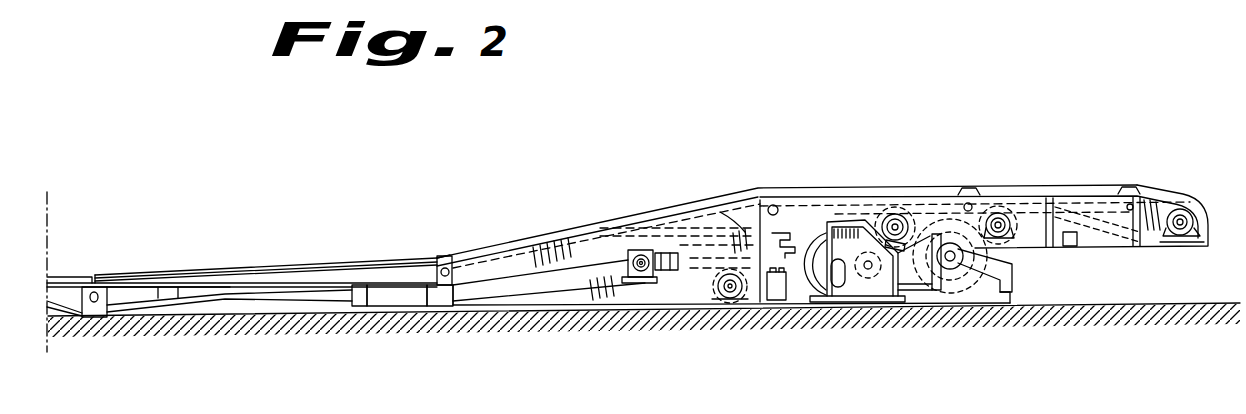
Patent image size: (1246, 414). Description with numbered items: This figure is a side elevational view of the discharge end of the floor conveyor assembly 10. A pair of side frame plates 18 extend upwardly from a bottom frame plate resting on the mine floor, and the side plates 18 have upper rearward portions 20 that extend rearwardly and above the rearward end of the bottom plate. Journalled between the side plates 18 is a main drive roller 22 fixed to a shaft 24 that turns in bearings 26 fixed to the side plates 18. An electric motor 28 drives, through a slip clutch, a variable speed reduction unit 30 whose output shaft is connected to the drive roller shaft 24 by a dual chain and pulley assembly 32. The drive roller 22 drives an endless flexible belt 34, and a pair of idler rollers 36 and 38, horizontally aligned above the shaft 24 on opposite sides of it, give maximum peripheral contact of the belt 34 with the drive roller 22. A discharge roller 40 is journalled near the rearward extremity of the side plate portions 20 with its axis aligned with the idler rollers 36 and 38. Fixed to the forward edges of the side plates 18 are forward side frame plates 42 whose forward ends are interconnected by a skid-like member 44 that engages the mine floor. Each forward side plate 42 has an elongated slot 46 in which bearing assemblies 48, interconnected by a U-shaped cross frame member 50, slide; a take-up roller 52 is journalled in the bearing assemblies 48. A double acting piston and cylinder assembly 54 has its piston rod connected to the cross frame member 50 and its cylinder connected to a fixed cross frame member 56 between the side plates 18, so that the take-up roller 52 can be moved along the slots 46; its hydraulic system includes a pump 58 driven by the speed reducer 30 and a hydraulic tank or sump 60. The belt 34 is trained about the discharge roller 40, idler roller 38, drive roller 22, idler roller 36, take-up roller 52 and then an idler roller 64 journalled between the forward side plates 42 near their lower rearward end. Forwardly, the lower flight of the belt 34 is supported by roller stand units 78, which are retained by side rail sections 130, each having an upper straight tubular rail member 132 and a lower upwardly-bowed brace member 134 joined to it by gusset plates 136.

The floor conveyor assembly 10 is at (795, 150).
The side frame plates 18 is at (844, 200).
The upper rearward portions 20 is at (1078, 240).
The main drive roller 22 is at (980, 263).
The shaft 24 is at (953, 262).
The bearings 26 is at (943, 247).
The electric motor 28 is at (803, 232).
The variable speed reduction unit 30 is at (865, 286).
The dual chain and pulley assembly 32 is at (915, 293).
The endless flexible belt 34 is at (390, 257).
The idler roller 36 is at (893, 203).
The idler roller 38 is at (1008, 213).
The discharge roller 40 is at (1203, 208).
The forward side frame plates 42 is at (548, 243).
The skid-like member 44 is at (447, 310).
The elongated slot 46 is at (567, 277).
The bearing assemblies 48 is at (648, 247).
The U-shaped cross frame member 50 is at (683, 218).
The take-up roller 52 is at (655, 283).
The double acting piston and cylinder assembly 54 is at (718, 207).
The fixed cross frame member 56 is at (783, 188).
The pump 58 is at (838, 288).
The hydraulic tank or sump 60 is at (775, 290).
The idler roller 64 is at (712, 300).
The roller stand unit 78 is at (94, 306).
The side rail section 130 is at (311, 263).
The upper straight tubular rail member 132 is at (233, 274).
The lower upwardly-bowed brace member 134 is at (157, 307).
The gusset plates 136 is at (263, 292).